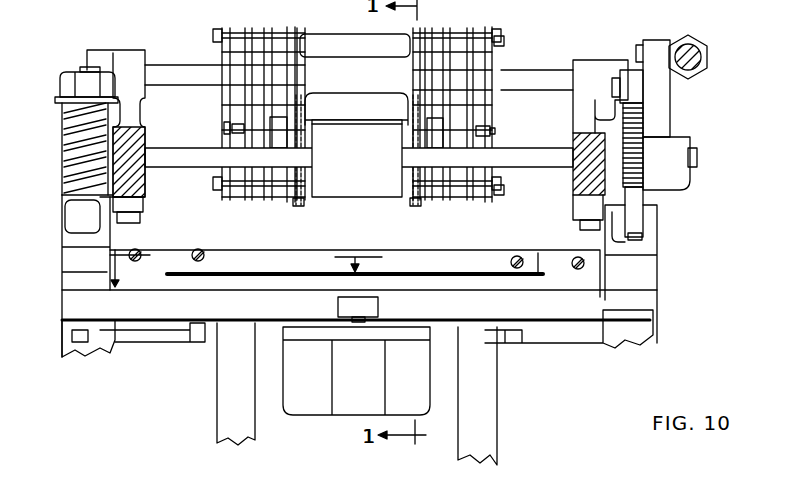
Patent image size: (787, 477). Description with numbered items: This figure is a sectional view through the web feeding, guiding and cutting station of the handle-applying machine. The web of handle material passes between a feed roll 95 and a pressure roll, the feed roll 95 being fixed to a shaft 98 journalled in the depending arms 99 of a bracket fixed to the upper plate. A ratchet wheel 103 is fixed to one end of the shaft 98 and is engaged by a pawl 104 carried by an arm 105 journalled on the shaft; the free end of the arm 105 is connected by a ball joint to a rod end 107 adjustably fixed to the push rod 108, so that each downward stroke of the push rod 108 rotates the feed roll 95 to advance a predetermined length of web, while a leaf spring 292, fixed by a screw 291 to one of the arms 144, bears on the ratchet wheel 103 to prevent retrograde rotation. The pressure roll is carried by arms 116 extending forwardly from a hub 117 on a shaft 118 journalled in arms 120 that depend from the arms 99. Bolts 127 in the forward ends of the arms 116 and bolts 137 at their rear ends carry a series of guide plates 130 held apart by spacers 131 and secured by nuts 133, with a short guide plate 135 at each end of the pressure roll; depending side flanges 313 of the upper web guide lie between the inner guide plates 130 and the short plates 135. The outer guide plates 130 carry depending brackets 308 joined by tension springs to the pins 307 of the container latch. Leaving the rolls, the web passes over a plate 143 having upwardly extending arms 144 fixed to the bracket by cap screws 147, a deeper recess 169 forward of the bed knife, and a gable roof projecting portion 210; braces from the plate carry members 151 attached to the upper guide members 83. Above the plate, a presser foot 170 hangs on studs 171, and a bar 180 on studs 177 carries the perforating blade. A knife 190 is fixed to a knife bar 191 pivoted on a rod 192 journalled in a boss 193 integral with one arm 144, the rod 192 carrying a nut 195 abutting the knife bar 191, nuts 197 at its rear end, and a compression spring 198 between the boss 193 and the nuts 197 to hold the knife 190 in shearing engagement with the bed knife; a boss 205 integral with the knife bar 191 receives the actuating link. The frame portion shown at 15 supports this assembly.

The base frame 15 is at (367, 294).
The upper guide members 83 is at (222, 400).
The feed roll 95 is at (363, 169).
The shaft 98 is at (195, 164).
The depending arms 99 is at (137, 143).
The ratchet wheel 103 is at (645, 170).
The pawl 104 is at (637, 90).
The arm 105 is at (660, 100).
The rod end 107 is at (685, 44).
The push rod 108 is at (698, 47).
The arms 116 is at (293, 112).
The hub 117 is at (365, 85).
The shaft 118 is at (524, 76).
The arms 120 is at (125, 60).
The bolts 127 is at (504, 191).
The guide plates 130 is at (243, 25).
The spacers 131 is at (457, 40).
The nuts 133 is at (504, 46).
The short guide plate 135 is at (407, 112).
The bolts 137 is at (403, 43).
The plate 143 is at (373, 237).
The arms 144 is at (62, 242).
The cap screws 147 is at (142, 218).
The members 151 is at (162, 333).
The recess 169 is at (405, 330).
The presser foot 170 is at (453, 292).
The studs 171 is at (135, 262).
The studs 177 is at (198, 248).
The bar 180 is at (485, 258).
The knife 190 is at (268, 322).
The knife bar 191 is at (204, 314).
The rod 192 is at (82, 70).
The boss 193 is at (78, 220).
The nut 195 is at (62, 321).
The nuts 197 is at (68, 86).
The compression spring 198 is at (64, 142).
The boss 205 is at (368, 307).
The gable roof projecting portion 210 is at (373, 379).
The screw 291 is at (637, 237).
The leaf spring 292 is at (635, 217).
The pins 307 is at (236, 125).
The depending brackets 308 is at (236, 138).
The depending side flanges 313 is at (417, 175).